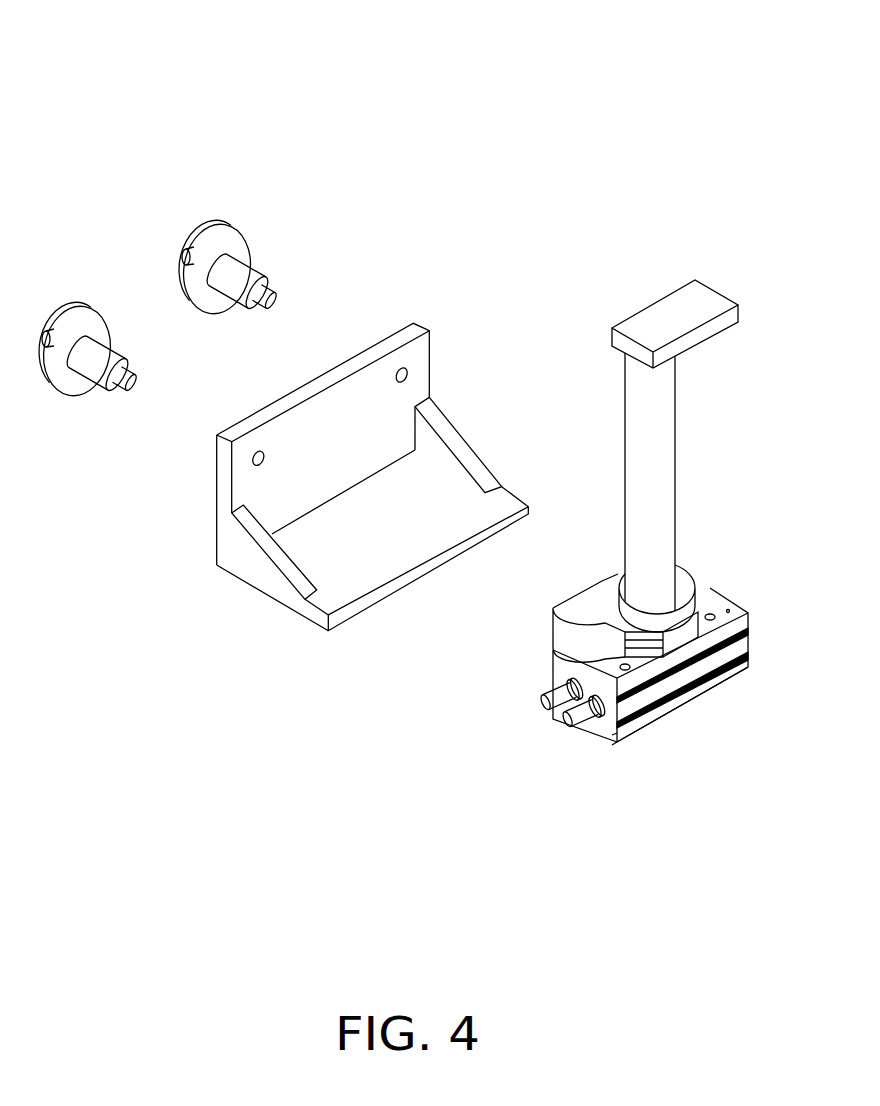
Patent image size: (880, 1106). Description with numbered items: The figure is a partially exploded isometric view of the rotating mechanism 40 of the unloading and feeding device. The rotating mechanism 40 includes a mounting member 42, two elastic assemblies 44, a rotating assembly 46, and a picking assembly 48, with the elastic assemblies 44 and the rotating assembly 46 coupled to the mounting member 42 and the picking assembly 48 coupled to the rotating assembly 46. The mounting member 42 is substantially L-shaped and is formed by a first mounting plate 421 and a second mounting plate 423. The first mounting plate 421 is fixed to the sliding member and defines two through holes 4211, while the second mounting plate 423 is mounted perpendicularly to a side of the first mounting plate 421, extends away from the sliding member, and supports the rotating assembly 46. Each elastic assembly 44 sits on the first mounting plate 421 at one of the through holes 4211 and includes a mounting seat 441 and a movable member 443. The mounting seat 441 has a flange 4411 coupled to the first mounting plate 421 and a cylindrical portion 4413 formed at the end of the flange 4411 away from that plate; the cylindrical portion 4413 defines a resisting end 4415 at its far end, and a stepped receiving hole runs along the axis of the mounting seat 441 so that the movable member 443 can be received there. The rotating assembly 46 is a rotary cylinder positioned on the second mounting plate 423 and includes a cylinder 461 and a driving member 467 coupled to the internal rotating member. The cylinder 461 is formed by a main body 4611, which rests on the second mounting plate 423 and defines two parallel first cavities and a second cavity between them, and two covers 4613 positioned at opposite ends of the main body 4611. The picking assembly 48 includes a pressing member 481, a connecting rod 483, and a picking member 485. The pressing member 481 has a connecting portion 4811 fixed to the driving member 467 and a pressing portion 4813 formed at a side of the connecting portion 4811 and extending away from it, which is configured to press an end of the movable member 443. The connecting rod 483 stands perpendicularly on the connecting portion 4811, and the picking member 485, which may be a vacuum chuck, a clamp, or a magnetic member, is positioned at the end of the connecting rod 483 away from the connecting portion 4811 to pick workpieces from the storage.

The rotating mechanism 40 is at (436, 56).
The mounting member 42 is at (366, 503).
The first mounting plate 421 is at (372, 461).
The through hole 4211 is at (412, 365).
The second mounting plate 423 is at (372, 565).
The elastic assembly 44 is at (80, 407).
The mounting seat 441 is at (302, 285).
The flange 4411 is at (237, 238).
The cylindrical portion 4413 is at (235, 267).
The resisting end 4415 is at (260, 297).
The movable member 443 is at (303, 316).
The rotating assembly 46 is at (680, 702).
The cylinder 461 is at (681, 699).
The main body 4611 is at (643, 720).
The cover 4613 is at (742, 666).
The driving member 467 is at (735, 642).
The picking assembly 48 is at (647, 471).
The pressing member 481 is at (615, 583).
The connecting portion 4811 is at (614, 584).
The pressing portion 4813 is at (565, 631).
The connecting rod 483 is at (662, 403).
The picking member 485 is at (690, 331).